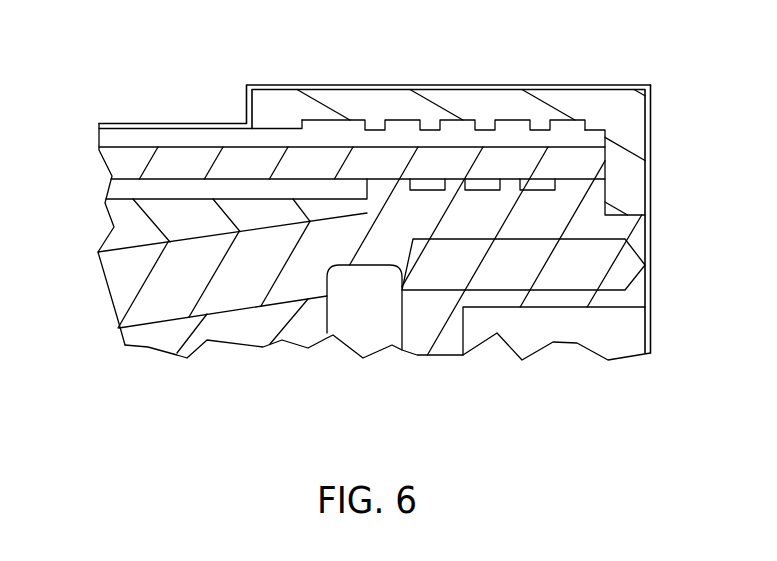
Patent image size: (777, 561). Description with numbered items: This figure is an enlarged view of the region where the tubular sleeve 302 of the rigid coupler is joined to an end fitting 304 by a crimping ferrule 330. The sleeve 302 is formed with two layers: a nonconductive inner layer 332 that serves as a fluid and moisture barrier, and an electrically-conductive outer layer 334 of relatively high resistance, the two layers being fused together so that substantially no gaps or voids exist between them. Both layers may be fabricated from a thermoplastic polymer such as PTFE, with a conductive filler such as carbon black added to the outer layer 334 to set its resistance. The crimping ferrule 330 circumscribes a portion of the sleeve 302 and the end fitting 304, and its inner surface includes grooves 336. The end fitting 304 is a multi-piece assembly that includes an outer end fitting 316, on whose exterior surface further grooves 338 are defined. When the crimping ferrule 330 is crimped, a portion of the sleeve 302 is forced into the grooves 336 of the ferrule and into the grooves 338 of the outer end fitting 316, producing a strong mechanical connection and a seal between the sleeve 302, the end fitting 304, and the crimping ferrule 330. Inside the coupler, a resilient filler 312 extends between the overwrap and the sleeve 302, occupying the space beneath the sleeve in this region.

The tubular sleeve 302 is at (185, 123).
The end fitting 304 is at (650, 278).
The crimping ferrule 330 is at (472, 87).
The grooves 336 is at (577, 119).
The outer layer 334 is at (117, 135).
The inner layer 332 is at (124, 168).
The grooves 338 is at (548, 195).
The resilient filler 312 is at (123, 228).
The outer end fitting 316 is at (121, 283).